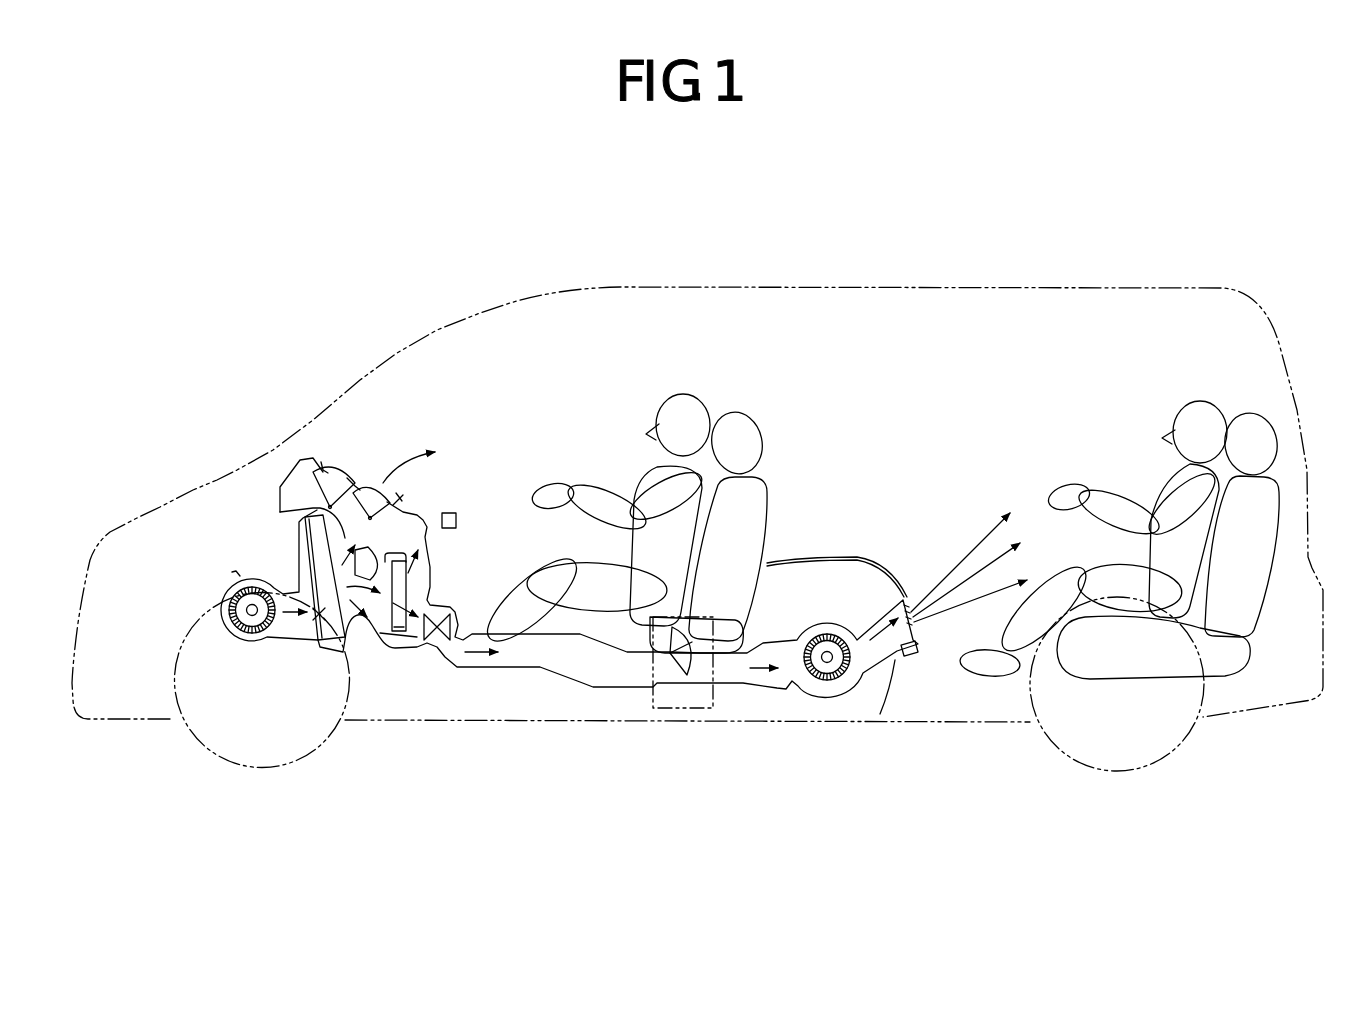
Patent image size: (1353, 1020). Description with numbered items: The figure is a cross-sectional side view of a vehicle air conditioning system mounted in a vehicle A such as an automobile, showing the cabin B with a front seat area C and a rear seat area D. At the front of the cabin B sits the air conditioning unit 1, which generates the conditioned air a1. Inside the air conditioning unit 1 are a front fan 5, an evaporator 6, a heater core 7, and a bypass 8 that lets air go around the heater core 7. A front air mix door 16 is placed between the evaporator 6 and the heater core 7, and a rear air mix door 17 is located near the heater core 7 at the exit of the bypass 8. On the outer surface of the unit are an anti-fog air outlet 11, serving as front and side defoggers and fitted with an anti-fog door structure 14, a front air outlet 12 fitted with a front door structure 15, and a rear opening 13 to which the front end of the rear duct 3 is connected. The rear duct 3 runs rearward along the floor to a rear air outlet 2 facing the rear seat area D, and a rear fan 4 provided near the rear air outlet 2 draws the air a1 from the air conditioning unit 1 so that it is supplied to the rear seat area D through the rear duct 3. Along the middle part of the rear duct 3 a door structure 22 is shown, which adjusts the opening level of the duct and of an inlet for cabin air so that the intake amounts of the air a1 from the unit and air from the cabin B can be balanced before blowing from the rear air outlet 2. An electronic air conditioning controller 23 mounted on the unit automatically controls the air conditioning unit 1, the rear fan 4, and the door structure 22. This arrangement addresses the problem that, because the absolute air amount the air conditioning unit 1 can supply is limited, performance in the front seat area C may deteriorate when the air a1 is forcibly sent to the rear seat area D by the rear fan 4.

The air conditioning unit 1 is at (260, 551).
The rear air outlet 2 is at (908, 595).
The rear duct 3 is at (743, 686).
The rear fan 4 is at (806, 681).
The front fan 5 is at (243, 650).
The evaporator 6 is at (310, 642).
The heater core 7 is at (375, 640).
The bypass 8 is at (403, 645).
The anti-fog air outlet 11 is at (333, 460).
The front air outlet 12 is at (368, 490).
The rear opening 13 is at (463, 633).
The anti-fog door structure 14 is at (327, 482).
The front door structure 15 is at (352, 530).
The front air mix door 16 is at (385, 543).
The rear air mix door 17 is at (440, 606).
The door structure 22 is at (688, 710).
The electronic air conditioning controller 23 is at (448, 513).
The air a1 is at (402, 463).
The vehicle A is at (812, 257).
The cabin B is at (877, 297).
The front seat area C is at (773, 462).
The rear seat area D is at (1282, 442).